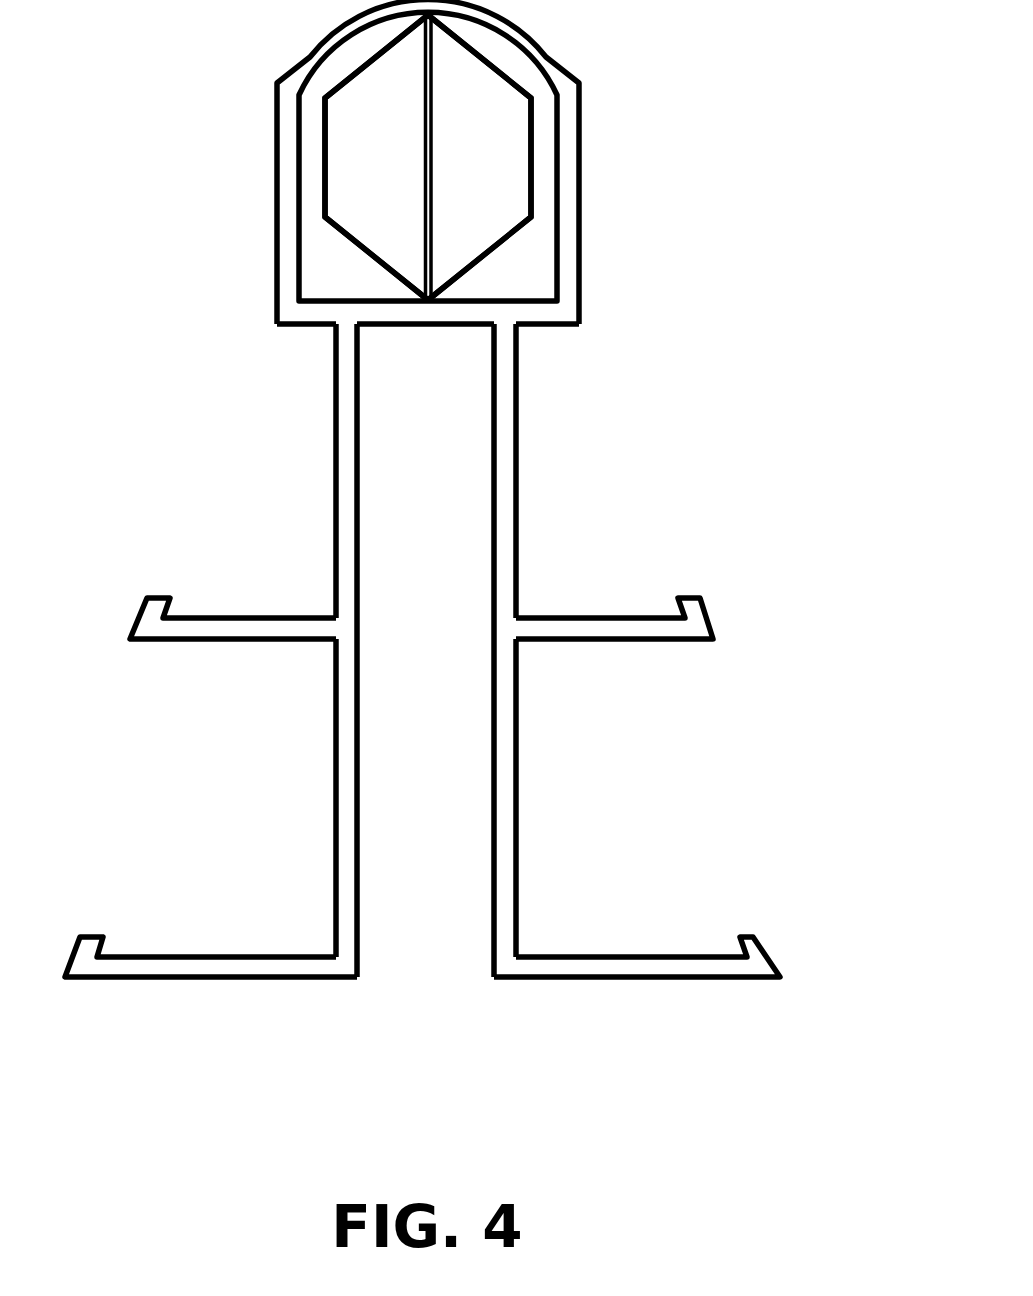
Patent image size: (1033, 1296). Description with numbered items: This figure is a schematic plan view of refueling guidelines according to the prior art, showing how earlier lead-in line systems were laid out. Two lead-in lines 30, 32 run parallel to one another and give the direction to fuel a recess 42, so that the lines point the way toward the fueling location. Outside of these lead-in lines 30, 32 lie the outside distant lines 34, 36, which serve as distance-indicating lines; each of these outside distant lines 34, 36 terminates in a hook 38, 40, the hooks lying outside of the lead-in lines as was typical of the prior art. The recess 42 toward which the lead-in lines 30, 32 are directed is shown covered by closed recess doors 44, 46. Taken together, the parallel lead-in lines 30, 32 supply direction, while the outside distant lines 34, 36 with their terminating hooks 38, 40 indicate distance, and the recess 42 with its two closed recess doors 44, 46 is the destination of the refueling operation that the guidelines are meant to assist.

The lead-in line 30 is at (342, 830).
The lead-in line 32 is at (505, 822).
The outside distant line 34 is at (212, 960).
The outside distant line 36 is at (245, 627).
The hook 38 is at (757, 942).
The hook 40 is at (698, 607).
The recess 42 is at (495, 223).
The recess door 44 is at (353, 175).
The recess door 46 is at (505, 175).